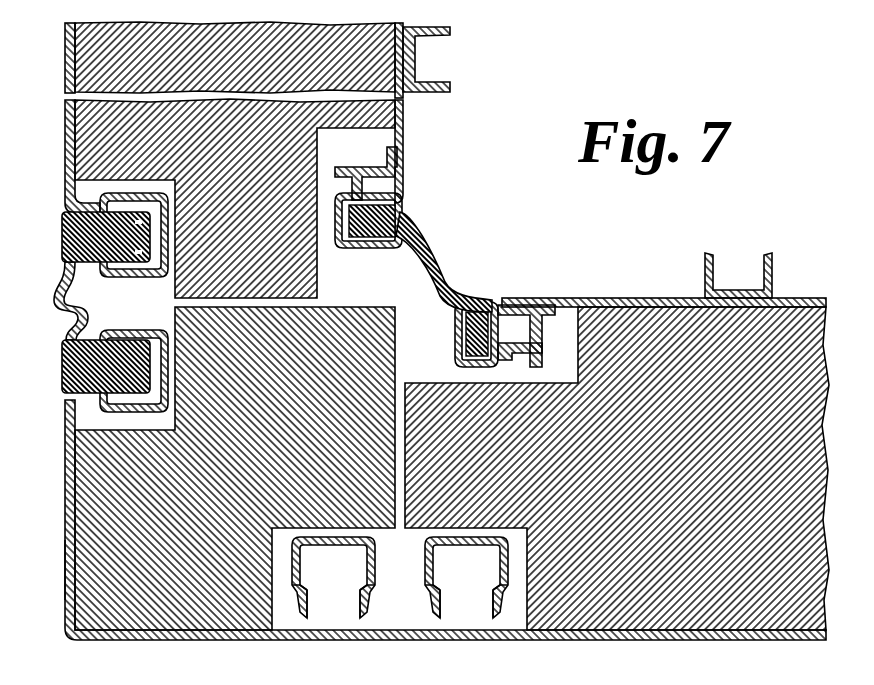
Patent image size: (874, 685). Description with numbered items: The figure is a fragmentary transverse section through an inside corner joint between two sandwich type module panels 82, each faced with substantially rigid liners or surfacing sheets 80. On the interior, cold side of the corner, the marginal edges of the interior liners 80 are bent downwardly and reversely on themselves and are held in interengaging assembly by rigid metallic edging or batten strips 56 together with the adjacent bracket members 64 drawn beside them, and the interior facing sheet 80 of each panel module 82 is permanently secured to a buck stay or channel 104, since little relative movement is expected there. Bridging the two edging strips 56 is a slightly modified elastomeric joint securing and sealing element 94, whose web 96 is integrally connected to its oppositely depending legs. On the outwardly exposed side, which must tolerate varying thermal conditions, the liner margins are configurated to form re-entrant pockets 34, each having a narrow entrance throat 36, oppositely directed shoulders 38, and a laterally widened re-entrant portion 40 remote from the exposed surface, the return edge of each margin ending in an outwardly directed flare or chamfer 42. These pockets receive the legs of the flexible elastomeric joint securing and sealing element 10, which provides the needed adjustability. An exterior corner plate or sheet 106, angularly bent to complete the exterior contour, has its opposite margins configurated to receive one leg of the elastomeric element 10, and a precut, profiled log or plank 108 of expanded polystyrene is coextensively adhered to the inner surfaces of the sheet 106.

The elastomeric joint securing and sealing element 10 is at (60, 312).
The pocket or recess 34 is at (334, 598).
The entrance throat 36 is at (330, 626).
The shoulder 38 is at (300, 596).
The laterally widened re-entrant portion 40 is at (346, 574).
The marginal edge flare or chamfer 42 is at (78, 272).
The edging or batten strip 56 is at (365, 168).
The bracket 64 is at (396, 188).
The liner or surfacing sheet 80 is at (66, 124).
The sandwich type module panel 82 is at (106, 143).
The modified elastomeric joint securing and sealing element 94 is at (416, 248).
The web 96 is at (438, 274).
The buck stay or channel 104 is at (438, 37).
The exterior corner plate or sheet 106 is at (65, 562).
The log or plank of insulating material 108 is at (136, 598).